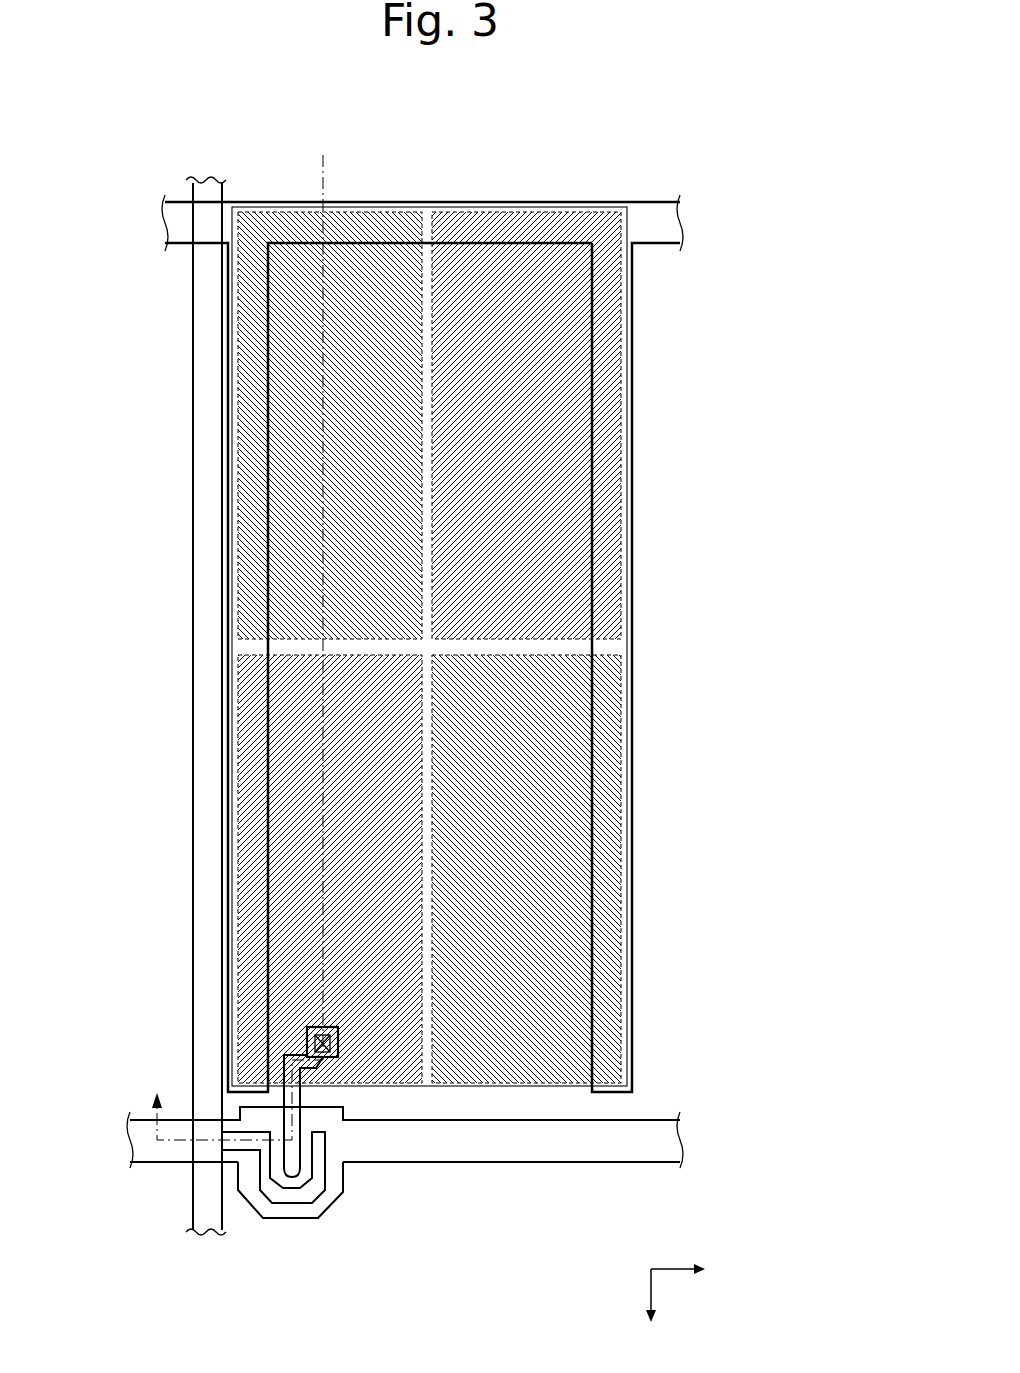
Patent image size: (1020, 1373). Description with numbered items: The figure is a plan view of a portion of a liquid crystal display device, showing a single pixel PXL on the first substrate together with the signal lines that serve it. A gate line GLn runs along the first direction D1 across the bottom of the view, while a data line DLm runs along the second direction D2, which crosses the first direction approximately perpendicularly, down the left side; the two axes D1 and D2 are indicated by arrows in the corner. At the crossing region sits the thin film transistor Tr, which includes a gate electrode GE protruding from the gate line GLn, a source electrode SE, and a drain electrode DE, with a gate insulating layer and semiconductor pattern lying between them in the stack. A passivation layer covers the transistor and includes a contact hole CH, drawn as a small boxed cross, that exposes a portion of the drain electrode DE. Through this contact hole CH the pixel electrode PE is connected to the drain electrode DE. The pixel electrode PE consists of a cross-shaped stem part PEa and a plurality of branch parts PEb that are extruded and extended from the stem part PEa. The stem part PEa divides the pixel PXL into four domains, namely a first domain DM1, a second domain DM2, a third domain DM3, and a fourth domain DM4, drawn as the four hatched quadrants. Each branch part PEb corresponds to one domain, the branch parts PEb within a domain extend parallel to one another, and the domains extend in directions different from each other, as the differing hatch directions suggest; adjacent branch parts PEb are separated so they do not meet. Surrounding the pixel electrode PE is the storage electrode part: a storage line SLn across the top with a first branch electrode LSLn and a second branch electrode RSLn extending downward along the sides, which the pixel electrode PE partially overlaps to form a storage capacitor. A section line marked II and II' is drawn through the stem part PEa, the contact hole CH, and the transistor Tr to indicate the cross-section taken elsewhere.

The pixel PXL is at (446, 735).
The pixel electrode PE is at (446, 646).
The stem part PEa is at (430, 480).
The branch parts PEb is at (417, 647).
The first domain DM1 is at (306, 810).
The second domain DM2 is at (306, 560).
The third domain DM3 is at (550, 560).
The fourth domain DM4 is at (550, 800).
The storage line SLn is at (416, 643).
The first branch electrode LSLn is at (228, 327).
The second branch electrode RSLn is at (628, 352).
The data line DLm is at (207, 722).
The gate line GLn is at (530, 1163).
The contact hole CH is at (307, 1040).
The thin film transistor Tr is at (287, 1200).
The drain electrode DE is at (282, 1168).
The source electrode SE is at (297, 1204).
The gate electrode GE is at (333, 1204).
The section line II is at (236, 647).
The section line II' is at (326, 139).
The first direction D1 is at (693, 1284).
The second direction D2 is at (650, 1331).